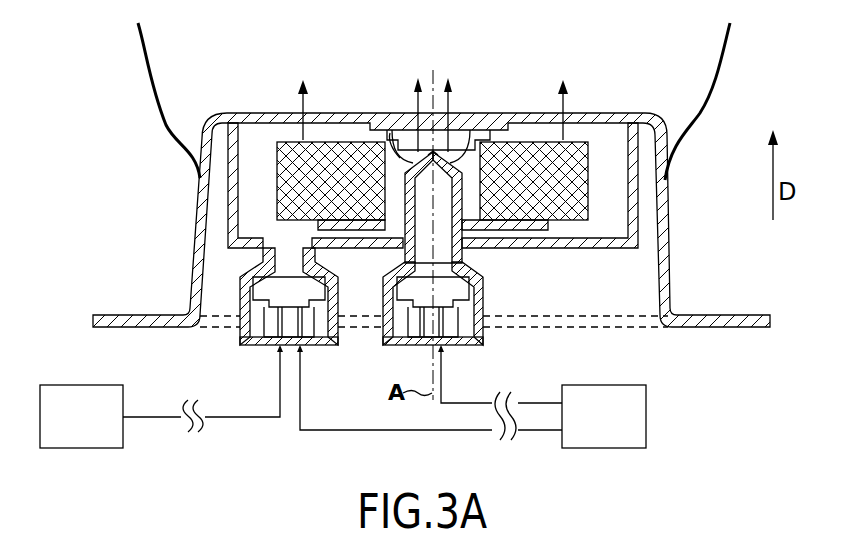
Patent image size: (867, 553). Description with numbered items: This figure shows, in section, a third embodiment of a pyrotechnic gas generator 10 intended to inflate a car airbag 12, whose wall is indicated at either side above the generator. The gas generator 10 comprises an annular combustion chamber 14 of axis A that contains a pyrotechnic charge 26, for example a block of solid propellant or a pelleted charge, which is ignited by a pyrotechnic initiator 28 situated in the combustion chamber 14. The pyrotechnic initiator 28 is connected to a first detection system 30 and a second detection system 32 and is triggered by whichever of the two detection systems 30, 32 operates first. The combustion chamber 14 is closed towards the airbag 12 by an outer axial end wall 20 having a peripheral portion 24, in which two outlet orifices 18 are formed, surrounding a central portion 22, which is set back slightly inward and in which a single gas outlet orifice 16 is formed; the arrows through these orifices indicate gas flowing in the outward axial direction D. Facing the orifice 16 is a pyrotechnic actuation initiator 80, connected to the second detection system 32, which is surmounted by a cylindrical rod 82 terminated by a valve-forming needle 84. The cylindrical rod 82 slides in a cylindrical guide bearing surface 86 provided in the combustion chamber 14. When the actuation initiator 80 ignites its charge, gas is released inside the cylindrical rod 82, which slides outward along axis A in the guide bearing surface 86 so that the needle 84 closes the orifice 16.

The pyrotechnic gas generator 10 is at (633, 88).
The car airbag 12 is at (143, 50).
The combustion chamber 14 is at (610, 170).
The gas outlet orifice 16 is at (450, 143).
The outlet orifices 18 is at (313, 110).
The outer axial end wall 20 is at (208, 111).
The central portion 22 is at (467, 130).
The peripheral portion 24 is at (242, 112).
The pyrotechnic charge 26 is at (293, 178).
The pyrotechnic initiator 28 is at (267, 285).
The first detection system 30 is at (93, 430).
The second detection system 32 is at (616, 430).
The pyrotechnic actuation initiator 80 is at (450, 285).
The cylindrical rod 82 is at (405, 187).
The valve-forming needle 84 is at (390, 133).
The cylindrical guide bearing surface 86 is at (462, 230).